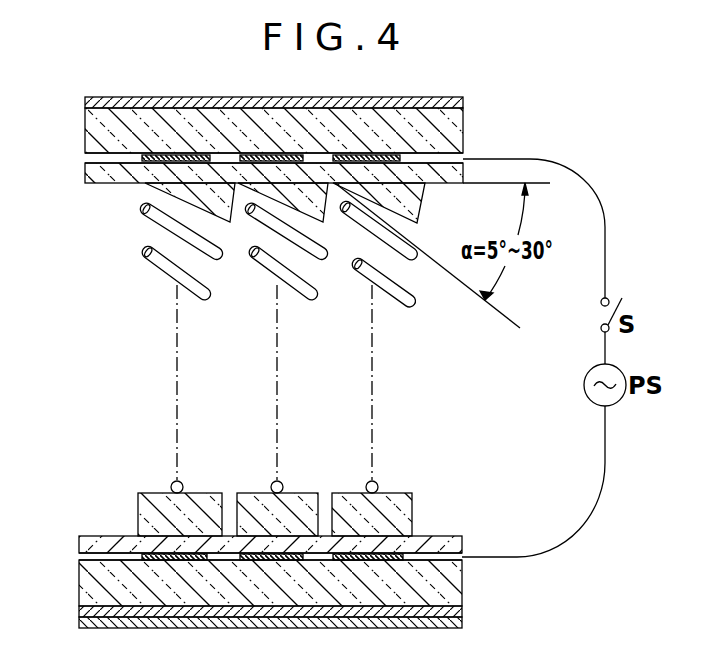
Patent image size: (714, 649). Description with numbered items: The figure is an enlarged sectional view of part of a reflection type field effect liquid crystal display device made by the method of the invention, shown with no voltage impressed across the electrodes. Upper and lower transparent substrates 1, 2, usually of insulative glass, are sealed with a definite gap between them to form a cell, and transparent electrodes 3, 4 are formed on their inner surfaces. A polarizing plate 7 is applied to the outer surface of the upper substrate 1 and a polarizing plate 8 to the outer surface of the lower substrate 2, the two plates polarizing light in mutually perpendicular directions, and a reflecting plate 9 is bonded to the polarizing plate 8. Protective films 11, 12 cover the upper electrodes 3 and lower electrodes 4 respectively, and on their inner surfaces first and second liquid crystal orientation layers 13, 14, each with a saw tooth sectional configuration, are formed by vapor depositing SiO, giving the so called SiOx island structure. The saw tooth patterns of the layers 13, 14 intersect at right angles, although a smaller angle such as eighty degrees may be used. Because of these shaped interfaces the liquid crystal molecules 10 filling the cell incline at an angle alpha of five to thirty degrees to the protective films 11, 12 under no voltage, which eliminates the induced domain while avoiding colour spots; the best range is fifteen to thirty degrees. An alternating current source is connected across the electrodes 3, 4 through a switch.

The upper transparent substrate 1 is at (85, 128).
The lower transparent substrate 2 is at (87, 582).
The upper transparent electrodes 3 is at (88, 157).
The lower transparent electrodes 4 is at (110, 556).
The upper polarizing plate 7 is at (85, 103).
The lower polarizing plate 8 is at (82, 612).
The reflecting plate 9 is at (82, 625).
The liquid crystal molecules 10 is at (413, 302).
The upper protective film 11 is at (88, 174).
The lower protective film 12 is at (103, 538).
The first liquid crystal orientation layer 13 is at (150, 187).
The second liquid crystal orientation layer 14 is at (150, 498).